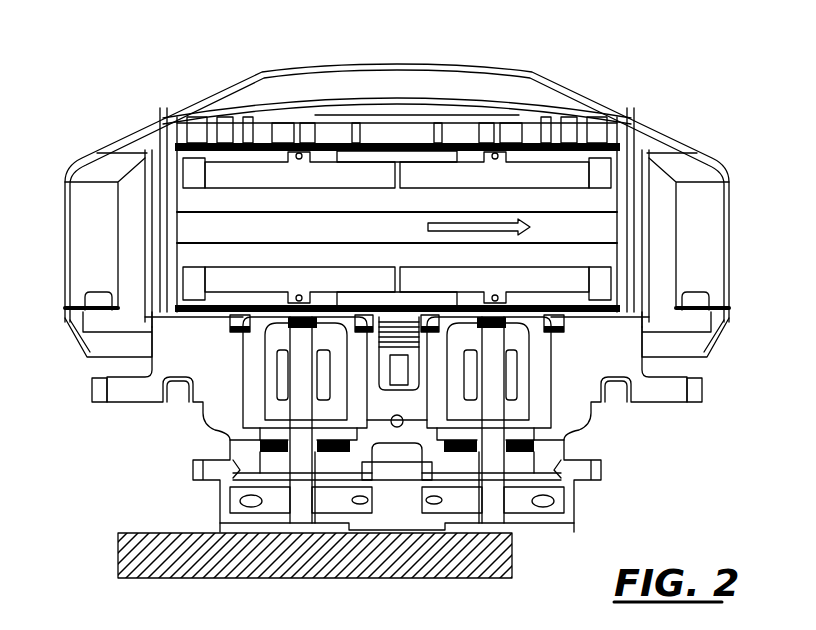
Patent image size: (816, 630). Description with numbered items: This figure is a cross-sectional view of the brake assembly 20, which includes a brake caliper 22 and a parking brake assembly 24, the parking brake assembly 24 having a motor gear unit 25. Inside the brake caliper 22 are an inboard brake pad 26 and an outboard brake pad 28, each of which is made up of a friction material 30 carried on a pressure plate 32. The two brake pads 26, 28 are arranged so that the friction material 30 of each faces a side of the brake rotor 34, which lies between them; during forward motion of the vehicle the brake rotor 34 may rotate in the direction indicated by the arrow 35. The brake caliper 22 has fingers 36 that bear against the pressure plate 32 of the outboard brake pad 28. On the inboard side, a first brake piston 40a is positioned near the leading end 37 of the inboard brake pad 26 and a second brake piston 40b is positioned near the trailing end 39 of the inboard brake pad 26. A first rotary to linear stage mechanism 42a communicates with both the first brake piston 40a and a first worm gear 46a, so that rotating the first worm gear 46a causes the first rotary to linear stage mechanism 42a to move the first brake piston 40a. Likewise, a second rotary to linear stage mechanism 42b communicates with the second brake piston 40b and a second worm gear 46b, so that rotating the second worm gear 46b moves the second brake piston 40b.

The brake assembly 20 is at (80, 102).
The brake caliper 22 is at (738, 226).
The parking brake assembly 24 is at (562, 592).
The motor gear unit 25 is at (315, 555).
The inboard brake pad 26 is at (247, 278).
The outboard brake pad 28 is at (280, 172).
The friction material 30 is at (313, 182).
The pressure plate 32 is at (529, 155).
The brake rotor 34 is at (296, 242).
The arrow 35 is at (427, 227).
The fingers 36 is at (237, 123).
The leading end 37 is at (205, 288).
The trailing end 39 is at (586, 283).
The first brake piston 40a is at (255, 365).
The second brake piston 40b is at (540, 364).
The first rotary to linear stage mechanism 42a is at (286, 378).
The second rotary to linear stage mechanism 42b is at (508, 378).
The first worm gear 46a is at (245, 500).
The second worm gear 46b is at (556, 500).